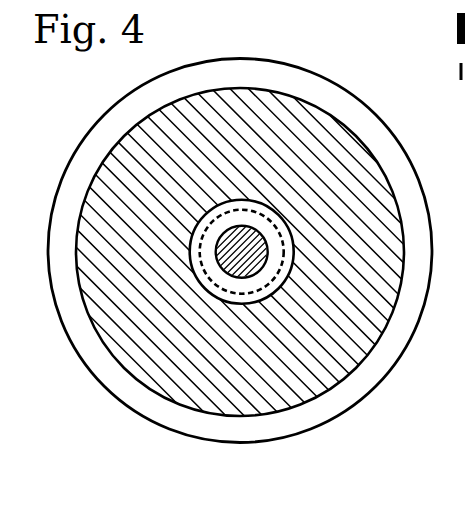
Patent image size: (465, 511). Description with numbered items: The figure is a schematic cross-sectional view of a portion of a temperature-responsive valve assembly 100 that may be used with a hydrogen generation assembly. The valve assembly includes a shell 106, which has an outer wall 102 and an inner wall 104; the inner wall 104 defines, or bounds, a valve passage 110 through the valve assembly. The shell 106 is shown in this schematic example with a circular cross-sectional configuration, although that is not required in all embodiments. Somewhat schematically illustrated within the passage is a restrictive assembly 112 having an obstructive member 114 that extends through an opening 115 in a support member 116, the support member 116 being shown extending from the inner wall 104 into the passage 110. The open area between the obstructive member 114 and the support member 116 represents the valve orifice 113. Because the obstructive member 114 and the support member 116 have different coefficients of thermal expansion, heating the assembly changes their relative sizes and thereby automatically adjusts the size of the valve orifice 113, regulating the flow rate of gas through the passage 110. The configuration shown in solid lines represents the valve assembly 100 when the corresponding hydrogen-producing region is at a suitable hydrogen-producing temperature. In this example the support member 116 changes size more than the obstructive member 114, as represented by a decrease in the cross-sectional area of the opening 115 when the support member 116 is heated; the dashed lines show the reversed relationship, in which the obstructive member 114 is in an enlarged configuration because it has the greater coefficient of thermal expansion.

The temperature-responsive valve assembly 100 is at (68, 98).
The outer wall 102 is at (140, 418).
The inner wall 104 is at (308, 395).
The shell 106 is at (226, 450).
The valve passage 110 is at (251, 133).
The restrictive assembly 112 is at (368, 94).
The valve orifice 113 is at (247, 313).
The obstructive member 114 is at (222, 274).
The opening 115 is at (240, 296).
The support member 116 is at (384, 172).